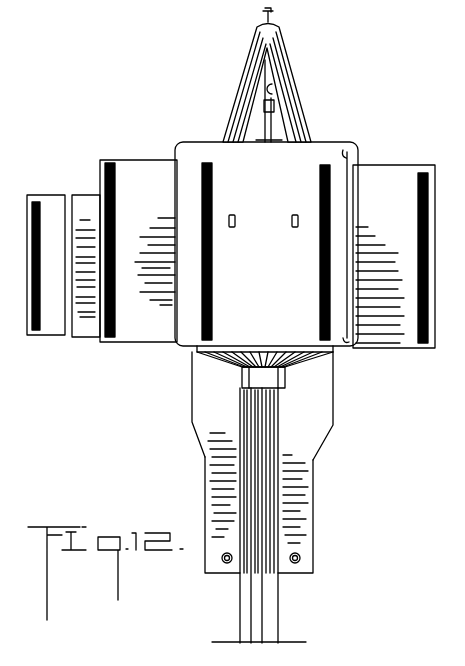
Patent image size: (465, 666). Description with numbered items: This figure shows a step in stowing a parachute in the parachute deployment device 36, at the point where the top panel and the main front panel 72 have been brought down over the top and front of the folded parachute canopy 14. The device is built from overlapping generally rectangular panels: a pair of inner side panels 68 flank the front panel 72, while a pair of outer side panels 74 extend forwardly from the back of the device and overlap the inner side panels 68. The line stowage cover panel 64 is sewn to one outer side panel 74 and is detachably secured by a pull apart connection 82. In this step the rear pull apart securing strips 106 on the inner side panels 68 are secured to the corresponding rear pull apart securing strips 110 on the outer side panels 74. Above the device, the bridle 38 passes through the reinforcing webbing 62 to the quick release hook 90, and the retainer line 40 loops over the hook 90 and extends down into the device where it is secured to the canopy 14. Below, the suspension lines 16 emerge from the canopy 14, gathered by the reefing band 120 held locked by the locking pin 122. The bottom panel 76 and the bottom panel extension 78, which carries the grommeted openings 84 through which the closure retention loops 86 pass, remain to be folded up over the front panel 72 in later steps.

The parachute canopy 14 is at (325, 357).
The suspension lines 16 is at (240, 629).
The parachute deployment device 36 is at (168, 137).
The bridle 38 is at (262, 15).
The retainer line 40 is at (256, 117).
The reinforcing webbing 62 is at (256, 68).
The line stowage cover panel 64 is at (46, 195).
The inner side panels 68 is at (183, 346).
The main front panel 72 is at (272, 158).
The outer side panels 74 is at (391, 170).
The bottom panel 76 is at (197, 420).
The bottom panel extension 78 is at (214, 496).
The pull apart connection 82 is at (36, 332).
The grommeted openings 84 is at (226, 566).
The closure retention loops 86 is at (291, 222).
The quick release hook 90 is at (259, 97).
The rear pull apart securing strips 106 is at (203, 192).
The rear pull apart securing strips 110 is at (114, 252).
The reefing band 120 is at (283, 394).
The locking pin 122 is at (238, 368).